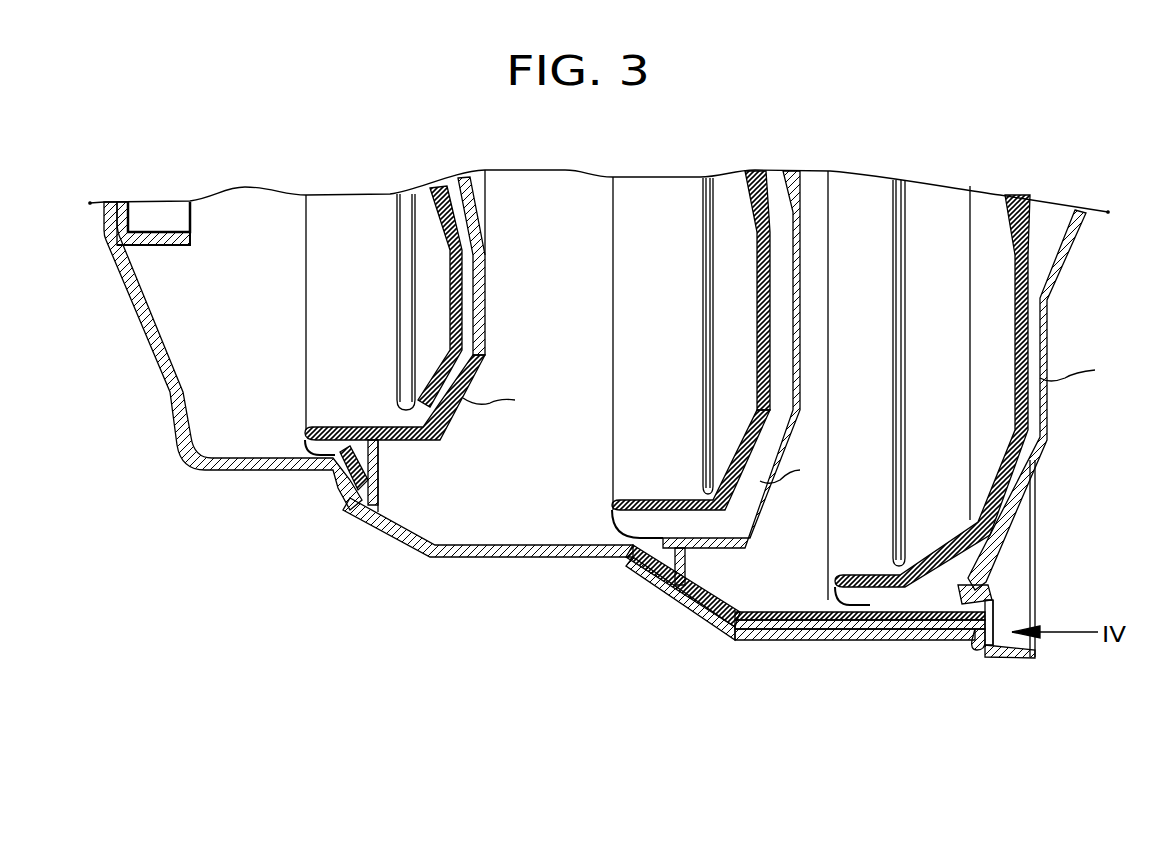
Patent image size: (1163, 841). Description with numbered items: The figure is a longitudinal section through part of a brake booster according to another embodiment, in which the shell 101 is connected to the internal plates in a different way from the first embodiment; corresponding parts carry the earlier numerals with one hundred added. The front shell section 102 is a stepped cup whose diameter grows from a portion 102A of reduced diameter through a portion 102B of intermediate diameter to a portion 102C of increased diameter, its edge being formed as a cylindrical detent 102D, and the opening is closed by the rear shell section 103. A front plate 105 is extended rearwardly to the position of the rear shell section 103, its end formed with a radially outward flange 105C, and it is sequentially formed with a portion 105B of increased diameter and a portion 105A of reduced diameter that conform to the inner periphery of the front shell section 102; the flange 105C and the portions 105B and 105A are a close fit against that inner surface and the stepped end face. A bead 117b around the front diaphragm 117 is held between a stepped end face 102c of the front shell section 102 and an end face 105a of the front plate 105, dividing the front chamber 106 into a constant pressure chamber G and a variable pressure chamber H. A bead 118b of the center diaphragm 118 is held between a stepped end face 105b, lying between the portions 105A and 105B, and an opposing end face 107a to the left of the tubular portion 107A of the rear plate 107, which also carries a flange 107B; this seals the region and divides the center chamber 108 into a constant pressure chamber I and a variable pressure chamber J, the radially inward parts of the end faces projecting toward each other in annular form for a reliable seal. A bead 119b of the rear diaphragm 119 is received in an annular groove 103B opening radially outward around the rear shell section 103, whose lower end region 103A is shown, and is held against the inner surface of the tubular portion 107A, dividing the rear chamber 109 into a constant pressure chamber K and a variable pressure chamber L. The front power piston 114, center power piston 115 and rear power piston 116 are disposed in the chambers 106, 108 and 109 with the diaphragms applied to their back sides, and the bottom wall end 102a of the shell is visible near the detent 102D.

The shell 101 is at (175, 440).
The front shell section 102 is at (162, 378).
The portion of reduced diameter 102A is at (240, 472).
The portion of intermediate diameter 102B is at (490, 558).
The portion of increased diameter 102C is at (836, 641).
The cylindrical detent 102D is at (1032, 657).
The bottom wall end 102a is at (978, 647).
The stepped end face 102c is at (336, 496).
The rear shell section 103 is at (1052, 308).
The side wall lower end 103A is at (1000, 629).
The annular groove 103B is at (985, 600).
The front plate 105 is at (480, 213).
The portion of reduced diameter 105A is at (506, 545).
The portion of increased diameter 105B is at (780, 616).
The flange 105C is at (991, 648).
The end face 105a is at (380, 487).
The stepped end face 105b is at (633, 558).
The front chamber 106 is at (253, 283).
The rear plate 107 is at (801, 227).
The tubular portion 107A is at (807, 618).
The flange 107B is at (1005, 657).
The end face 107a is at (685, 580).
The center chamber 108 is at (567, 365).
The rear chamber 109 is at (860, 380).
The front power piston 114 is at (448, 236).
The center power piston 115 is at (756, 245).
The rear power piston 116 is at (1006, 256).
The front diaphragm 117 is at (447, 190).
The bead 117b is at (360, 495).
The center diaphragm 118 is at (760, 170).
The bead 118b is at (662, 583).
The rear diaphragm 119 is at (1026, 205).
The bead 119b is at (946, 562).
The constant pressure chamber G is at (356, 345).
The variable pressure chamber H is at (498, 403).
The constant pressure chamber I is at (653, 377).
The variable pressure chamber J is at (785, 471).
The constant pressure chamber K is at (941, 379).
The variable pressure chamber L is at (1075, 373).